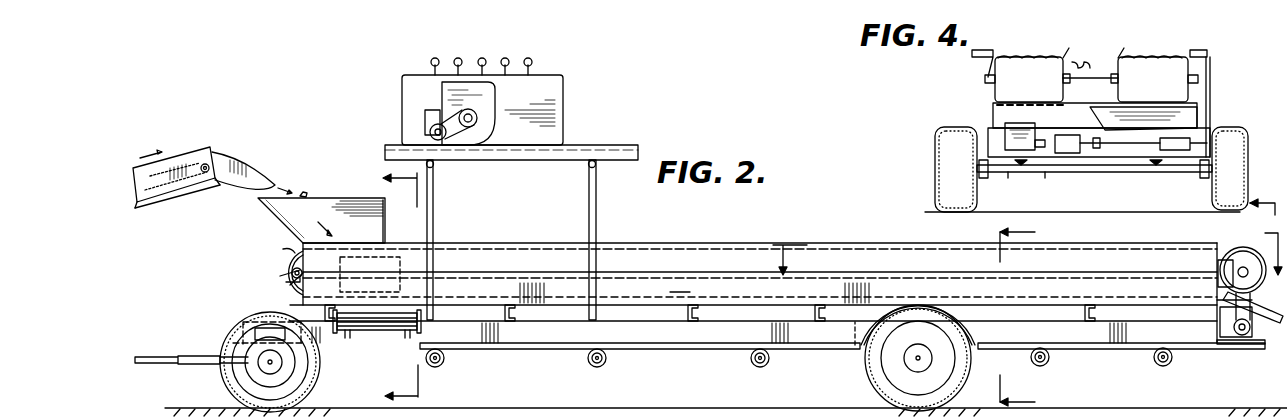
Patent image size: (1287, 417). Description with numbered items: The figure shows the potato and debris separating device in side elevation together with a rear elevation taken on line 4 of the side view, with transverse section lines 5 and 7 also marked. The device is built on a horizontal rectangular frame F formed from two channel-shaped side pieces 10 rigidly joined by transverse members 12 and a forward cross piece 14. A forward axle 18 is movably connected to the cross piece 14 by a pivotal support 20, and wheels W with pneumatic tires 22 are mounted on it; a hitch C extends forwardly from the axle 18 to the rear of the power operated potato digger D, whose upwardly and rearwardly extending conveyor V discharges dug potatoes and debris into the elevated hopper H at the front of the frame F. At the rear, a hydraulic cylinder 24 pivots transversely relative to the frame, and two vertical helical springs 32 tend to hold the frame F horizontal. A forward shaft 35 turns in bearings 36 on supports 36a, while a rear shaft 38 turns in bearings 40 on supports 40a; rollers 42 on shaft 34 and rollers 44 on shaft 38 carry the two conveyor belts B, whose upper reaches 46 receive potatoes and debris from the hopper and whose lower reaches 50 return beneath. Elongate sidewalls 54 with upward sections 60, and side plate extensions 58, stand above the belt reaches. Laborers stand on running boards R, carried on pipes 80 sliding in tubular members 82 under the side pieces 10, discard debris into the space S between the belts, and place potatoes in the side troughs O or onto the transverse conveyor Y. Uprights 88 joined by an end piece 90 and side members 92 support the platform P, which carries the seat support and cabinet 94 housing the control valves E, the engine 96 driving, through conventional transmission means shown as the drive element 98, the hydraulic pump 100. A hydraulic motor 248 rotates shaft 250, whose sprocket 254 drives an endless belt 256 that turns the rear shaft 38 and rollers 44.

In FIG. 2, the side pieces 10 is at (388, 284).
In FIG. 2, the transverse rigid members 12 is at (704, 306).
In FIG. 2, the forwardly disposed cross piece 14 is at (260, 326).
In FIG. 4, the forwardly disposed cross piece 14 is at (1020, 160).
In FIG. 2, the forwardly disposed axle 18 is at (266, 370).
In FIG. 4, the forwardly disposed axle 18 is at (1060, 172).
In FIG. 2, the pivotal support 20 is at (252, 368).
In FIG. 4, the pivotal support 20 is at (1128, 166).
In FIG. 2, the pneumatic tires 22 is at (310, 390).
In FIG. 4, the pneumatic tires 22 is at (936, 200).
In FIG. 2, the hydraulic cylinder 24 is at (1256, 295).
In FIG. 4, the helical springs 32 is at (1026, 164).
In FIG. 2, the shaft 34 is at (280, 276).
In FIG. 2, the horizontally disposed shaft 35 is at (290, 285).
In FIG. 2, the bearings 36 is at (294, 286).
In FIG. 2, the supports 36a is at (336, 286).
In FIG. 2, the shaft 38 is at (1218, 303).
In FIG. 2, the bearings 40 is at (1240, 248).
In FIG. 2, the supports 40a is at (1230, 280).
In FIG. 2, the rollers 42 is at (282, 247).
In FIG. 4, the rollers 44 is at (1073, 74).
In FIG. 2, the upper reaches 46 is at (1228, 258).
In FIG. 2, the lower reaches 50 is at (452, 300).
In FIG. 2, the sidewalls 54 is at (679, 285).
In FIG. 4, the upwardly and outwardly extending sections 58 is at (1070, 52).
In FIG. 4, the upwardly extending sections 60 is at (1000, 50).
In FIG. 2, the lengths of pipe 80 is at (799, 370).
In FIG. 2, the tubular members 82 is at (444, 360).
In FIG. 2, the uprights 88 is at (433, 208).
In FIG. 2, the horizontal end piece 90 is at (436, 166).
In FIG. 2, the side members 92 is at (522, 160).
In FIG. 2, the cabinet 94 is at (564, 102).
In FIG. 2, the engine 96 is at (917, 233).
In FIG. 2, the drive pulley 98 is at (426, 113).
In FIG. 2, the hydraulic pump 100 is at (438, 108).
In FIG. 4, the hydraulically operated motor 248 is at (1035, 125).
In FIG. 4, the shaft 250 is at (1140, 156).
In FIG. 2, the sprocket 254 is at (1250, 329).
In FIG. 4, the endless belt 256 is at (1210, 102).
In FIG. 2, the conveyor belts B is at (276, 254).
In FIG. 4, the conveyor belts B is at (1091, 79).
In FIG. 2, the hitch C is at (203, 356).
In FIG. 2, the potato digger D is at (168, 206).
In FIG. 2, the manually operated valves E is at (515, 58).
In FIG. 2, the frame F is at (560, 334).
In FIG. 4, the frame F is at (990, 132).
In FIG. 2, the hopper H is at (331, 196).
In FIG. 2, the troughs O is at (876, 263).
In FIG. 4, the troughs O is at (985, 75).
In FIG. 2, the platform P is at (513, 154).
In FIG. 2, the running boards R is at (698, 350).
In FIG. 4, the space S is at (1086, 57).
In FIG. 2, the conveyor V is at (198, 190).
In FIG. 2, the wheels W is at (588, 358).
In FIG. 4, the wheels W is at (1088, 169).
In FIG. 2, the transverse conveyor Y is at (399, 328).
In FIG. 2, the section line 4- 4 is at (1267, 241).
In FIG. 4, the section line 4- 4 is at (1262, 209).
In FIG. 2, the section line 5- 5 is at (1025, 315).
In FIG. 2, the section line 7- 7 is at (790, 260).